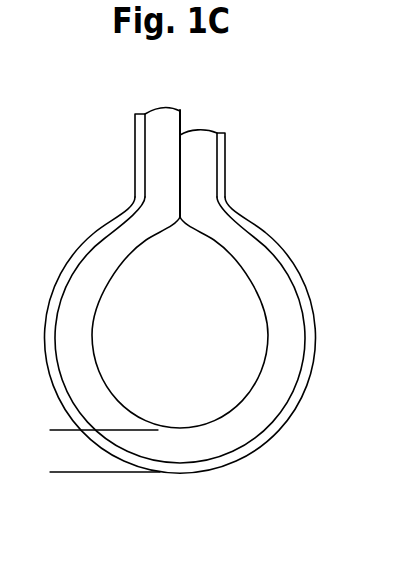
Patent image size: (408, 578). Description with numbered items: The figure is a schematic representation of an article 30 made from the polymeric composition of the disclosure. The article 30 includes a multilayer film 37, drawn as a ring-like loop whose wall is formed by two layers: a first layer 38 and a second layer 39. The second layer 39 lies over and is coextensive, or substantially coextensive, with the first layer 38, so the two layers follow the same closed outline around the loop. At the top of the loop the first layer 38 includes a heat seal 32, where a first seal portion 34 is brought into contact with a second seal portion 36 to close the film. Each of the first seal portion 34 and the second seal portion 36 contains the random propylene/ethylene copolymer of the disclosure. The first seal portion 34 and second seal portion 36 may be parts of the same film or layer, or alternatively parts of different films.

The article 30 is at (164, 264).
The heat seal 32 is at (179, 86).
The first seal portion 34 is at (180, 151).
The second seal portion 36 is at (181, 178).
The multilayer film 37 is at (49, 428).
The first layer 38 is at (72, 352).
The second layer 39 is at (62, 400).